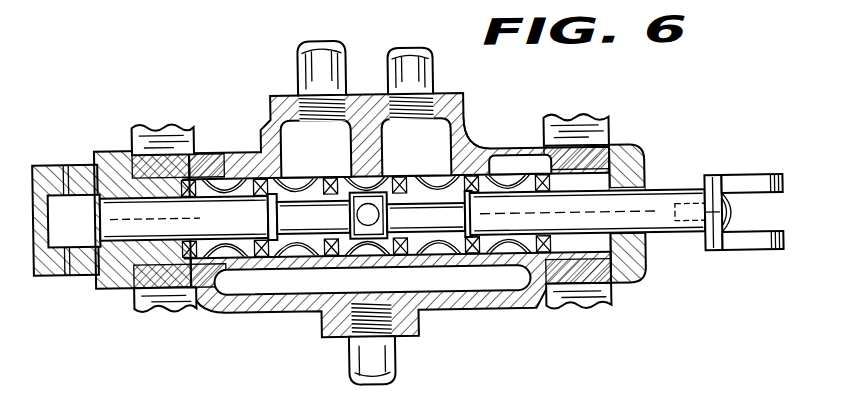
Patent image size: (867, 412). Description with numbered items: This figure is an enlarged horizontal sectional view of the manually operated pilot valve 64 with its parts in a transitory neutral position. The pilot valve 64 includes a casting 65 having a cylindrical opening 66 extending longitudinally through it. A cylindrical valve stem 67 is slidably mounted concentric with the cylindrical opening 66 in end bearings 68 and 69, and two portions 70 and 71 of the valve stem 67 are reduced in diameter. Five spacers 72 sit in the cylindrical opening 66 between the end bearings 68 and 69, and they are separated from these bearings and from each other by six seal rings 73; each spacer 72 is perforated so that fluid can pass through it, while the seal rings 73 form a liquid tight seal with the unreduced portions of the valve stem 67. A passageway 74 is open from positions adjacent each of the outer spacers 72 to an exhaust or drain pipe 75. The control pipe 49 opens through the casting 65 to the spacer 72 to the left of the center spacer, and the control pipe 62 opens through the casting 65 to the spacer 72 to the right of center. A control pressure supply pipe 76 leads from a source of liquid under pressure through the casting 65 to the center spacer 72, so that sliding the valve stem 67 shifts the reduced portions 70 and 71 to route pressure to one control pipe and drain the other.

The control pipe 49 is at (305, 70).
The control pipe 62 is at (423, 78).
The manually operated pilot valve 64 is at (120, 290).
The casting 65 is at (477, 152).
The cylindrical opening 66 is at (231, 175).
The cylindrical valve stem 67 is at (122, 215).
The end bearing 68 is at (117, 146).
The end bearing 69 is at (640, 175).
The reduced portion of the valve stem 70 is at (290, 213).
The reduced portion of the valve stem 71 is at (473, 219).
The spacer 72 is at (305, 169).
The seal ring 73 is at (280, 266).
The passageway 74 is at (481, 289).
The exhaust or drain pipe 75 is at (367, 360).
The control pressure supply pipe 76 is at (366, 244).